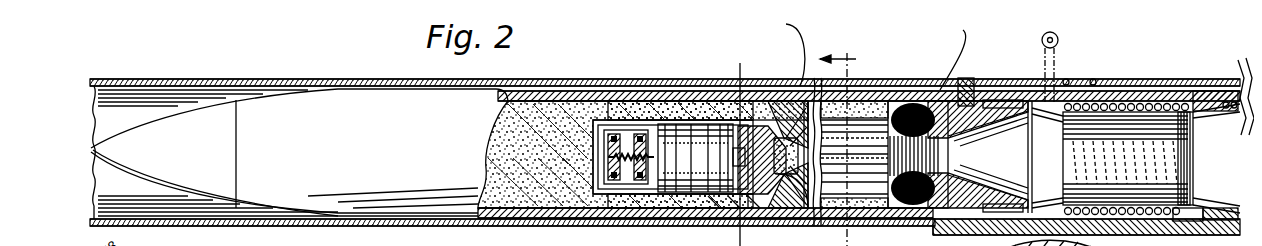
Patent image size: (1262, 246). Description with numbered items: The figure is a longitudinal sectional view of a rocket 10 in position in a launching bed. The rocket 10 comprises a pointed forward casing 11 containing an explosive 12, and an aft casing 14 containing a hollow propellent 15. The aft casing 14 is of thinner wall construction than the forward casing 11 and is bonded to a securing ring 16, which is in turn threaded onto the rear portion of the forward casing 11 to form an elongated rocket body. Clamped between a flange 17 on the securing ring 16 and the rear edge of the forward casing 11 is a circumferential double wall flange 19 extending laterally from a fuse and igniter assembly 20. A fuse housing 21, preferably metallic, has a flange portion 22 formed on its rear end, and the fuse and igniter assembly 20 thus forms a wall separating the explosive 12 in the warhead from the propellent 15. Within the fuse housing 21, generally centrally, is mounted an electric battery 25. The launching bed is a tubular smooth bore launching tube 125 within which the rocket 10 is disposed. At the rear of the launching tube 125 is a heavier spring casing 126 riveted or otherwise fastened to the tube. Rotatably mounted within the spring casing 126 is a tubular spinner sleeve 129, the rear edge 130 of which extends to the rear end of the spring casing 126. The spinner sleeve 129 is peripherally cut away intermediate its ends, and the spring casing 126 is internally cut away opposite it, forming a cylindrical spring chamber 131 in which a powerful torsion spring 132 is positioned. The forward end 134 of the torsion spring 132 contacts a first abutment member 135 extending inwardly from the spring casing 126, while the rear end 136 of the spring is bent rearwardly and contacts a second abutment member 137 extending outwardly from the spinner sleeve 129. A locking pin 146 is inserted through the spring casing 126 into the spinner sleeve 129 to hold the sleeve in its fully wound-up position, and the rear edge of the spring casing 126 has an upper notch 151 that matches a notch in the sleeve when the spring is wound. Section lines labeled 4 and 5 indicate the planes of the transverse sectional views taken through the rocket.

The section line 4- 4 is at (735, 146).
The section line 5- 5 is at (838, 140).
The rocket 10 is at (250, 133).
The forward casing 11 is at (512, 85).
The explosive 12 is at (615, 154).
The aft casing 14 is at (896, 86).
The hollow propellent 15 is at (876, 84).
The securing ring 16 is at (774, 204).
The flange 17 is at (764, 83).
The circumferential double wall flange 19 is at (790, 205).
The fuse and igniter assembly 20 is at (646, 110).
The fuse housing 21 is at (642, 210).
The flange portion 22 is at (746, 82).
The electric battery 25 is at (685, 114).
The launching tube 125 is at (592, 82).
The spring casing 126 is at (1178, 82).
The spinner sleeve 129 is at (1172, 202).
The rear edge 130 is at (1222, 206).
The spring chamber 131 is at (1135, 85).
The torsion spring 132 is at (1130, 84).
The forward end 134 is at (1068, 82).
The first abutment member 135 is at (1050, 83).
The rear end 136 is at (1162, 84).
The second abutment member 137 is at (1192, 84).
The locking pin 146 is at (1033, 49).
The upper notch 151 is at (1236, 80).